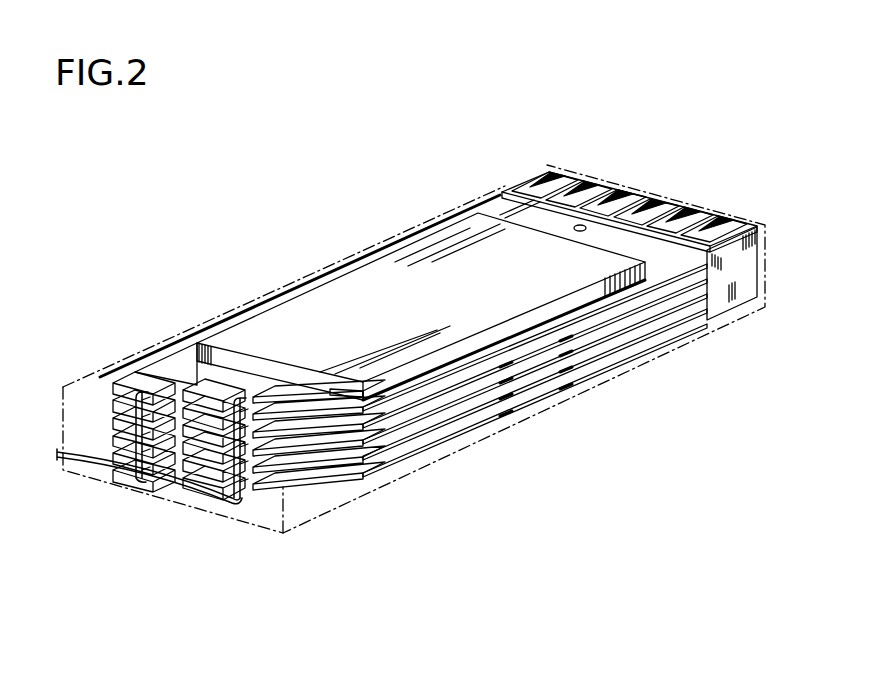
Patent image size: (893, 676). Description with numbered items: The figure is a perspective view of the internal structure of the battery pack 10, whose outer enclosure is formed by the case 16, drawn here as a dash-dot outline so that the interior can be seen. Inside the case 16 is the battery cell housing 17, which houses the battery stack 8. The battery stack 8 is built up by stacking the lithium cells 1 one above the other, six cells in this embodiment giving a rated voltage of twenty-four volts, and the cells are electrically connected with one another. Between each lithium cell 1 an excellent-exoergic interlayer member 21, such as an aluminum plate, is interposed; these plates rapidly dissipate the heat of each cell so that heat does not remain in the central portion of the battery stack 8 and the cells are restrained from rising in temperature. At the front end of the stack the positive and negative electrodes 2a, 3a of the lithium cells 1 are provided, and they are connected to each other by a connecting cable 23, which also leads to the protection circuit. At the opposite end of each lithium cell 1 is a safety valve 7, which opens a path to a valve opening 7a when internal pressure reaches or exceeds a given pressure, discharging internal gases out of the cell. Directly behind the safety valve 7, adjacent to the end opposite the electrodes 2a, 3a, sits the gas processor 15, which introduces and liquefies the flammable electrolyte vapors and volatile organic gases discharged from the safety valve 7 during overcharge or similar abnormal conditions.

The lithium cell 1 is at (432, 433).
The positive electrode 2a is at (150, 393).
The negative electrode 3a is at (324, 397).
The safety valve 7 is at (568, 226).
The valve opening 7a is at (583, 224).
The battery stack 8 is at (713, 310).
The battery pack 10 is at (503, 433).
The gas processor 15 is at (683, 213).
The case 16 is at (505, 186).
The battery cell housing 17 is at (183, 357).
The interlayer member 21 is at (360, 403).
The connecting cable 23 is at (62, 463).